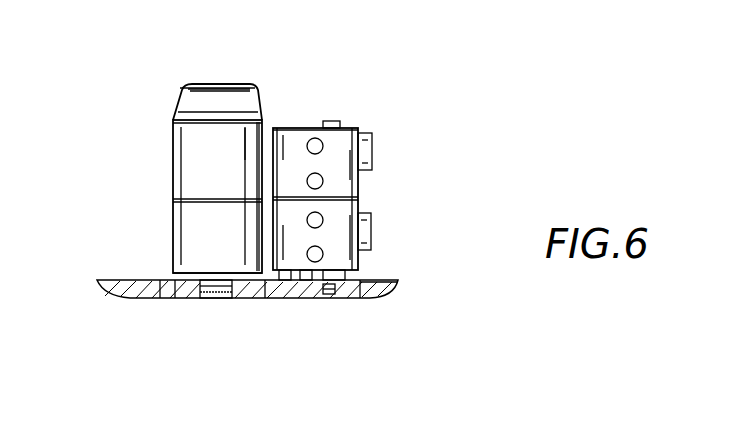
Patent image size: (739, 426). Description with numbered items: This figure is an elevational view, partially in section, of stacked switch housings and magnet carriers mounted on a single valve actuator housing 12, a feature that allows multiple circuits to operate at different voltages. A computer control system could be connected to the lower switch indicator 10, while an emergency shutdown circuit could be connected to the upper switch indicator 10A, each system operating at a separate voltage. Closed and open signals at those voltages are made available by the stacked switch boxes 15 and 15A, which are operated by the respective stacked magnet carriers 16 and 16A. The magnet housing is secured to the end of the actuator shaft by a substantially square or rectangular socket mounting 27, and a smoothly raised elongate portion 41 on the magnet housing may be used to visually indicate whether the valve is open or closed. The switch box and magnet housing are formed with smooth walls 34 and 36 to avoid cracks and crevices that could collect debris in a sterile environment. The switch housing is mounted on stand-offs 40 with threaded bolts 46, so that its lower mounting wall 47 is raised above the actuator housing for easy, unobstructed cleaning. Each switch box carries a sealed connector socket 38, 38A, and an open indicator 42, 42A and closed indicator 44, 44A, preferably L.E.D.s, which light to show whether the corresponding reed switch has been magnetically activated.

The position indicator assembly 10 is at (80, 228).
The switch indicator 10A is at (133, 95).
The valve actuator housing 12 is at (125, 287).
The switch housing 15 is at (291, 255).
The stacked switch box 15A is at (305, 128).
The magnet carrier 16 is at (185, 235).
The stacked magnet carrier 16A is at (237, 135).
The socket mounting 27 is at (208, 300).
The smooth wall 34 is at (185, 148).
The smooth wall 36 is at (350, 128).
The connector socket 38 is at (367, 228).
The connector socket 38A is at (372, 152).
The stand-off 40 is at (370, 286).
The raised elongate portion 41 is at (207, 90).
The open indicator 42 is at (322, 220).
The open indicator 42A is at (322, 146).
The closed indicator 44 is at (322, 254).
The closed indicator 44A is at (322, 181).
The threaded bolt 46 is at (340, 126).
The mounting wall 47 is at (320, 277).